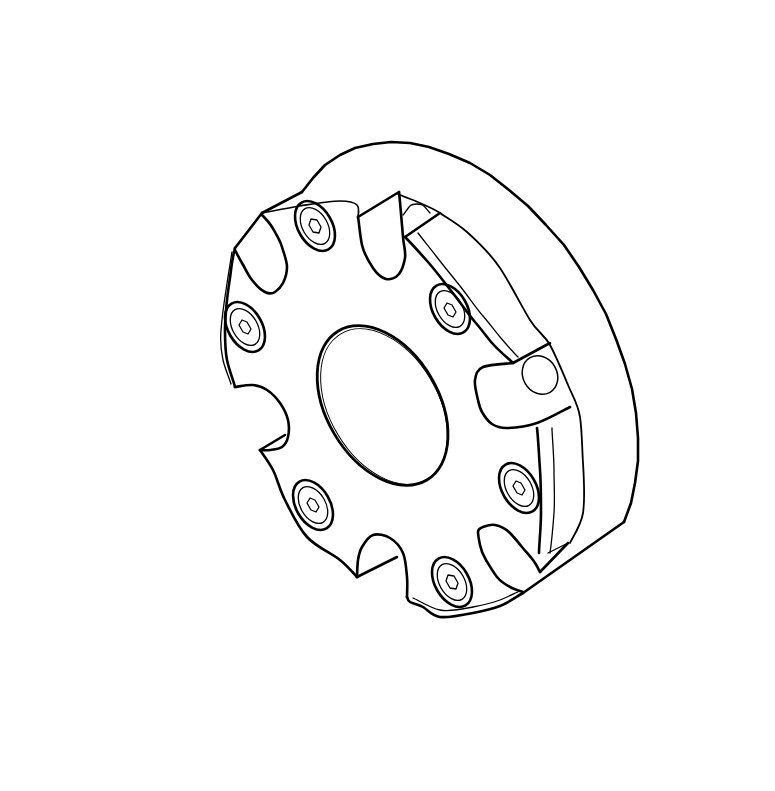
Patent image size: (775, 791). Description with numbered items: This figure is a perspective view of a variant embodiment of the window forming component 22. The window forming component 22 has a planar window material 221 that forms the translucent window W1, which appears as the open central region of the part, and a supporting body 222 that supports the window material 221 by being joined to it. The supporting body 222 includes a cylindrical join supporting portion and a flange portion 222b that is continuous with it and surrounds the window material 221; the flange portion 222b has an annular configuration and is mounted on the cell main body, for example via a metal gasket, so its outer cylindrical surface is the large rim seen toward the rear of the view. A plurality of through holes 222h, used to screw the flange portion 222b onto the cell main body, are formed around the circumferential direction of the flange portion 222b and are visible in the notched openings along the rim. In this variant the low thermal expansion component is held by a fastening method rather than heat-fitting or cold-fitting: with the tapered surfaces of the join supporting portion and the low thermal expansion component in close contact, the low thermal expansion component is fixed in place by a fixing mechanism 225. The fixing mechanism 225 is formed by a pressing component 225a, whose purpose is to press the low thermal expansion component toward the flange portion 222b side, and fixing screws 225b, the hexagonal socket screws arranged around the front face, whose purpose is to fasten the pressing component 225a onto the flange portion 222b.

The window forming component 22 is at (276, 155).
The supporting body 222 is at (423, 170).
The flange portion 222b is at (550, 273).
The through holes 222h is at (543, 380).
The fixing mechanism 225 is at (122, 240).
The pressing component 225a is at (236, 252).
The fixing screws 225b is at (245, 333).
The window material 221 is at (335, 401).
The translucent window W1 is at (393, 443).